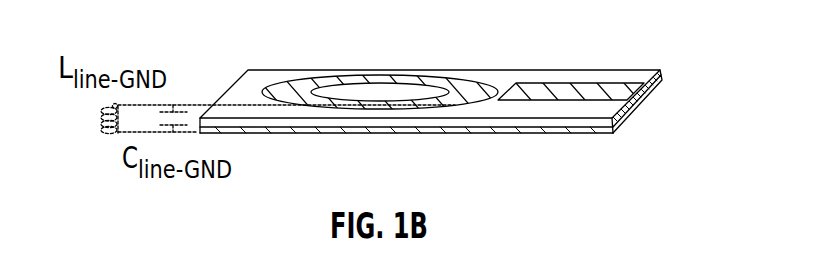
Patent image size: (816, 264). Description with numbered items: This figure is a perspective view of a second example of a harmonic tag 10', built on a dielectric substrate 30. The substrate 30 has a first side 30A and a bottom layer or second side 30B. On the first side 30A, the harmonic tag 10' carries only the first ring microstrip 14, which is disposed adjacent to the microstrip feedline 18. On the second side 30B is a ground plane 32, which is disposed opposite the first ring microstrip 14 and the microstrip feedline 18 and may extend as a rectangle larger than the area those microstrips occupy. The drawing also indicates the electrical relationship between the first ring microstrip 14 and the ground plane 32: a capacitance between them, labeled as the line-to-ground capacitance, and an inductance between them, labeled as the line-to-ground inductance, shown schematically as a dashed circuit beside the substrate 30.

The sensor device 10' is at (463, 105).
The ring-shaped electrode 14 is at (273, 86).
The rectangular electrode 18 is at (583, 83).
The substrate 30 is at (664, 76).
The top layer of substrate 30A is at (634, 72).
The bottom layer of substrate 30B is at (520, 136).
The intermediate layer of substrate 32 is at (442, 135).